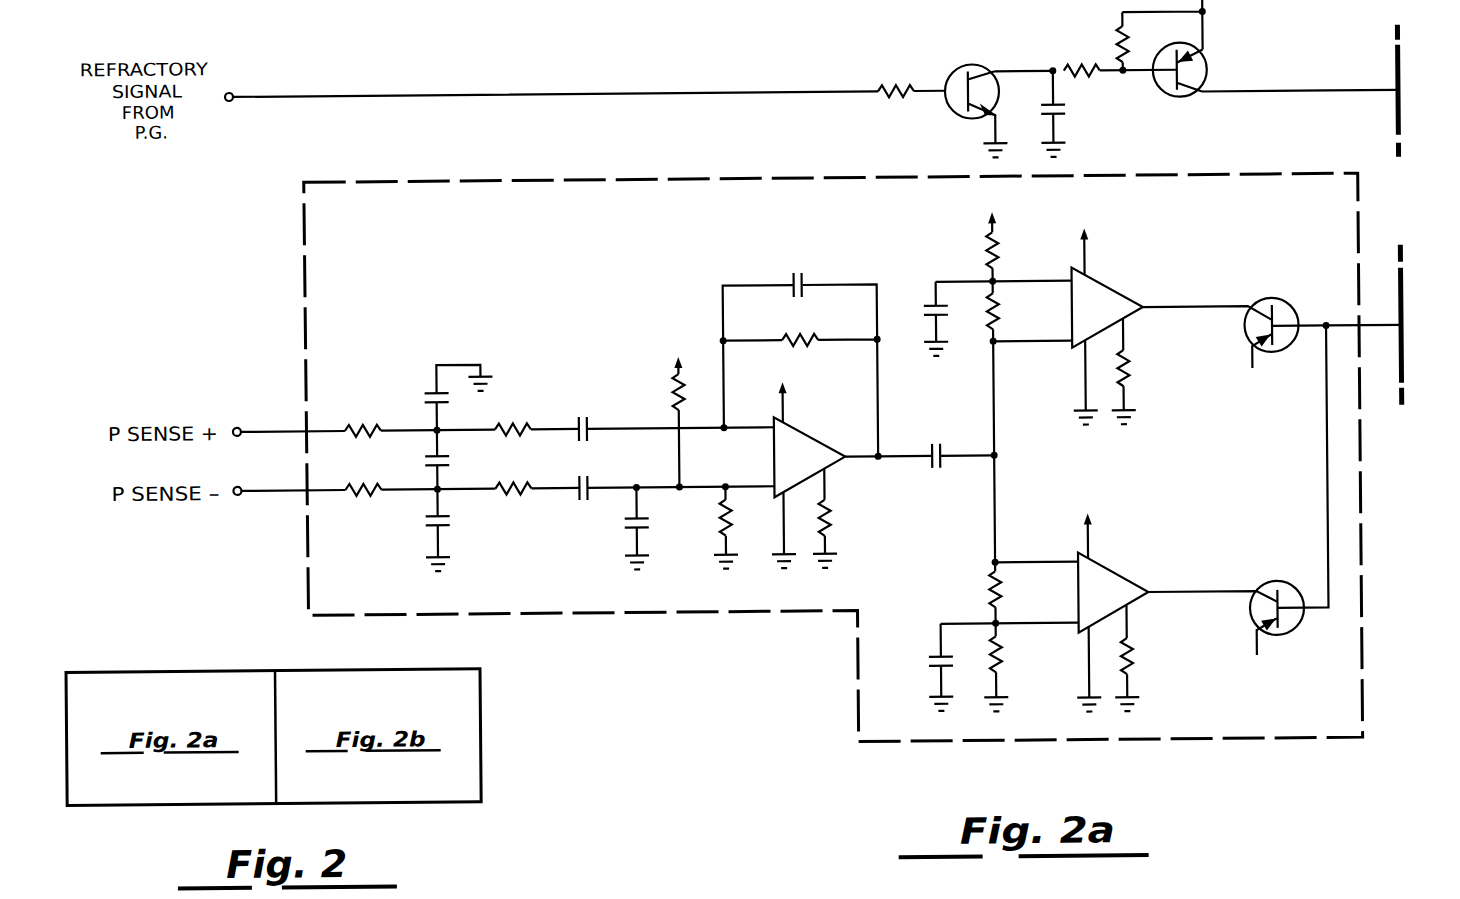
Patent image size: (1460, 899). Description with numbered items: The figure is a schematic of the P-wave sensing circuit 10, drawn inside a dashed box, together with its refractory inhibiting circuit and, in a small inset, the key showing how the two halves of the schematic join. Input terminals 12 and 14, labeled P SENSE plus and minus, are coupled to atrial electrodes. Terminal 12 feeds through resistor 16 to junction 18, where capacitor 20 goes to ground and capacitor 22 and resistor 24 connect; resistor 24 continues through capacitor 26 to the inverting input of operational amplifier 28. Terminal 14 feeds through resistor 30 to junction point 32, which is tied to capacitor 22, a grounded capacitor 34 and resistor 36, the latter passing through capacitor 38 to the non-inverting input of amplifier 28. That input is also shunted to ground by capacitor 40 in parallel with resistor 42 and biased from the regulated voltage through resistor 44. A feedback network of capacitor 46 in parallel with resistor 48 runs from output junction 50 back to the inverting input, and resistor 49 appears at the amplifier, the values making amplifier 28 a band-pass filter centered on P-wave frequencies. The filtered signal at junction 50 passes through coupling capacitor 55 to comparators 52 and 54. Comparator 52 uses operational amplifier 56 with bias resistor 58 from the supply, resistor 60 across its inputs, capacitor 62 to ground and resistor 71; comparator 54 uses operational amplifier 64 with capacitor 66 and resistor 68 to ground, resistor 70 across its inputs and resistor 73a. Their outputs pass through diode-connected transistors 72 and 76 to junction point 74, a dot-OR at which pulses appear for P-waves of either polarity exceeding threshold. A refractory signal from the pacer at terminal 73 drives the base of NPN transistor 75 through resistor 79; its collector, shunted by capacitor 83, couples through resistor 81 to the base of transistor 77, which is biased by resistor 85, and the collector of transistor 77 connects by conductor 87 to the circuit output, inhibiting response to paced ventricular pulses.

The P-wave sensing circuit 10 is at (573, 180).
The input terminal 12 is at (235, 428).
The input terminal 14 is at (235, 497).
The resistor 16 is at (364, 426).
The junction 18 is at (431, 439).
The capacitor 20 is at (423, 397).
The capacitor 22 is at (446, 466).
The resistor 24 is at (504, 422).
The capacitor 26 is at (579, 418).
The operational amplifier 28 is at (806, 438).
The resistor 30 is at (373, 500).
The junction point 32 is at (434, 498).
The capacitor 34 is at (448, 525).
The resistor 36 is at (506, 499).
The capacitor 38 is at (585, 506).
The capacitor 40 is at (643, 529).
The resistor 42 is at (718, 519).
The resistor 44 is at (670, 404).
The capacitor 46 is at (795, 277).
The resistor 48 is at (795, 340).
The resistor 49 is at (833, 527).
The output junction 50 is at (880, 468).
The comparator 52 is at (1118, 259).
The comparator 54 is at (1124, 541).
The coupling capacitor 55 is at (930, 445).
The operational amplifier 56 is at (1126, 301).
The bias resistor 58 is at (983, 261).
The resistor 60 is at (1001, 306).
The capacitor 62 is at (921, 315).
The operational amplifier 64 is at (1126, 585).
The capacitor 66 is at (924, 668).
The resistor 68 is at (1001, 669).
The resistor 70 is at (1001, 599).
The resistor 71 is at (1130, 388).
The transistor 72 is at (1242, 339).
The refractory signal input terminal 73 is at (230, 92).
The resistor 73a is at (1128, 673).
The junction point 74 is at (1323, 328).
The transistor 75 is at (977, 72).
The transistor 76 is at (1246, 619).
The transistor 77 is at (1208, 69).
The resistor 79 is at (894, 90).
The resistor 81 is at (1086, 73).
The capacitor 83 is at (1071, 116).
The bias resistor 85 is at (1117, 46).
The conductor 87 is at (1327, 100).